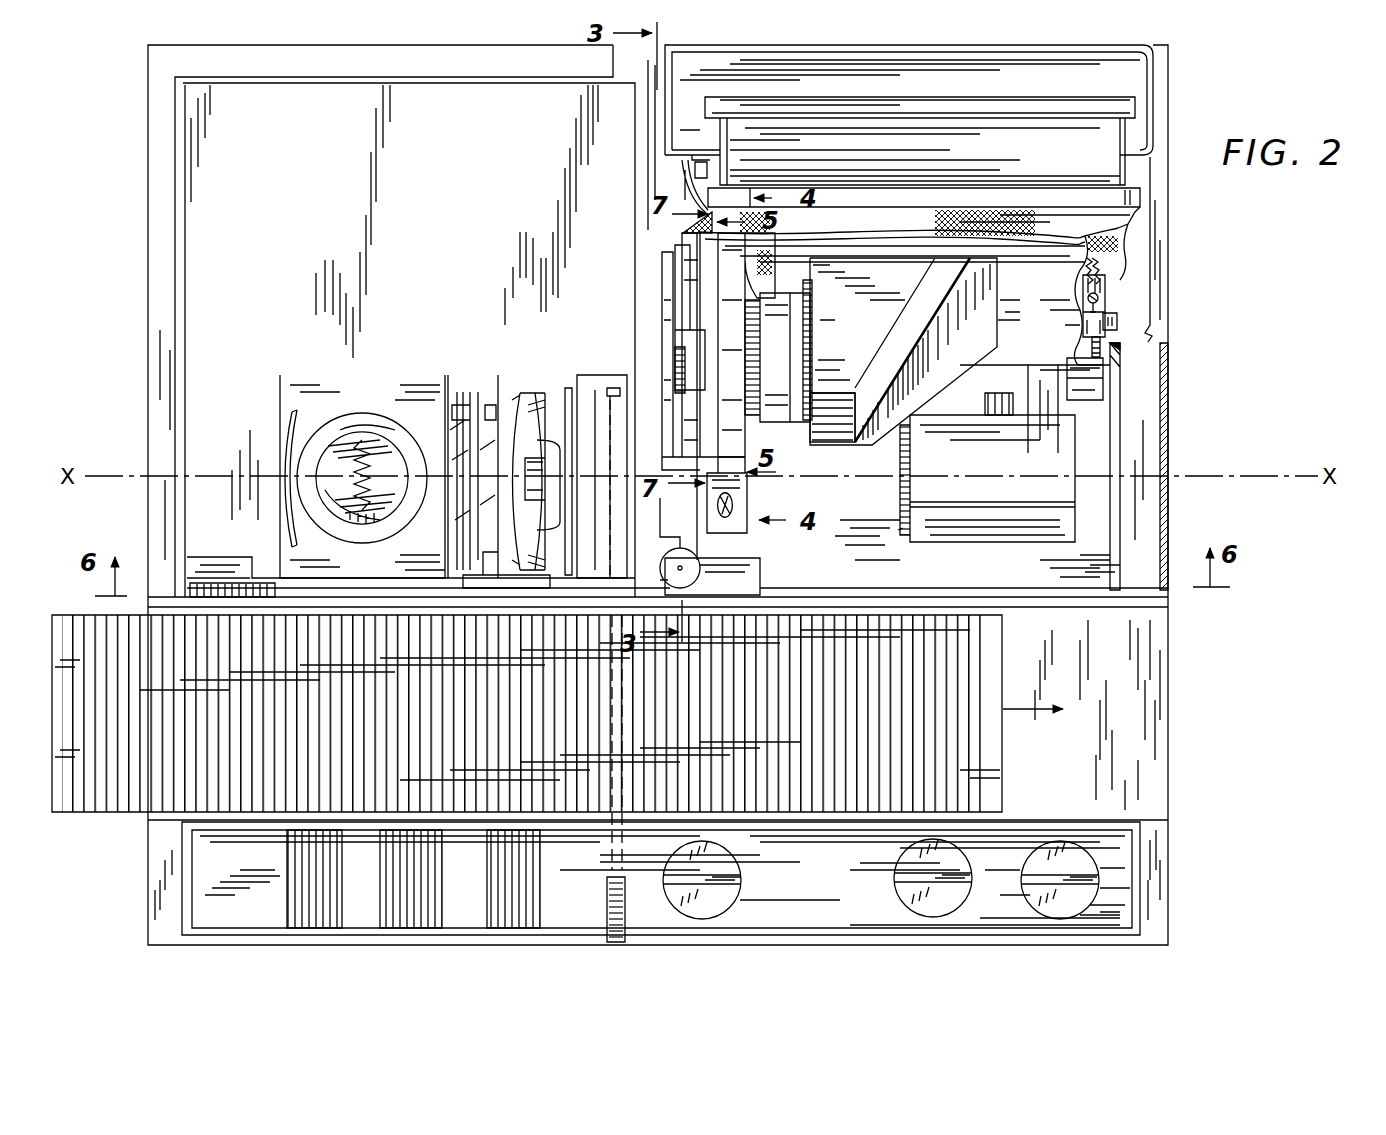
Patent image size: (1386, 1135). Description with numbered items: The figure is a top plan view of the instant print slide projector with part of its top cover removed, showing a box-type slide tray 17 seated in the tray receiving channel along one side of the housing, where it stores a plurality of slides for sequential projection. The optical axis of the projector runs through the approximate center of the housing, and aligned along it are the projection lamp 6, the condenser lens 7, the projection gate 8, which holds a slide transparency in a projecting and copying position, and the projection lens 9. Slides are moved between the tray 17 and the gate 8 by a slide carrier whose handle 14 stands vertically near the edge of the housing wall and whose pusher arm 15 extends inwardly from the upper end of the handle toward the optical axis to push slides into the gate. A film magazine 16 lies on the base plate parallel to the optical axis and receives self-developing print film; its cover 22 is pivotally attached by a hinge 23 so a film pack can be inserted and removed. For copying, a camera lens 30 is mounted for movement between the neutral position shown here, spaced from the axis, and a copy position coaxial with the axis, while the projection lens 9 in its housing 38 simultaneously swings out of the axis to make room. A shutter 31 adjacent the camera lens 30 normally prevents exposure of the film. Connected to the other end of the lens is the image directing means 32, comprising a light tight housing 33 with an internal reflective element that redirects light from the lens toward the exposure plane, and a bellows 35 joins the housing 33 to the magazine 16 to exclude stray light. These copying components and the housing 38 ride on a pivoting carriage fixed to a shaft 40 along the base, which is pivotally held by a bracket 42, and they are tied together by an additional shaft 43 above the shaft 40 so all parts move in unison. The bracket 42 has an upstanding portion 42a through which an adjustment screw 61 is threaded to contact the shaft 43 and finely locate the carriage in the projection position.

The projection lamp 6 is at (350, 447).
The condenser lens 7 is at (525, 410).
The projection gate 8 is at (600, 380).
The projection lens 9 is at (898, 528).
The handle 14 is at (617, 943).
The pusher arm 15 is at (624, 854).
The film magazine 16 is at (1138, 86).
The box-type slide tray 17 is at (1003, 652).
The cover 22 is at (1152, 147).
The hinge 23 is at (1128, 110).
The camera lens 30 is at (778, 370).
The shutter 31 is at (717, 325).
The image directing means 32 is at (990, 264).
The light tight housing 33 is at (836, 428).
The bellows 35 is at (1130, 232).
The housing 38 is at (998, 471).
The shaft 40 is at (1118, 326).
The bracket 42 is at (1106, 284).
The upstanding portion 42a is at (1104, 338).
The shaft 43 is at (1096, 385).
The adjustment screw 61 is at (1099, 300).